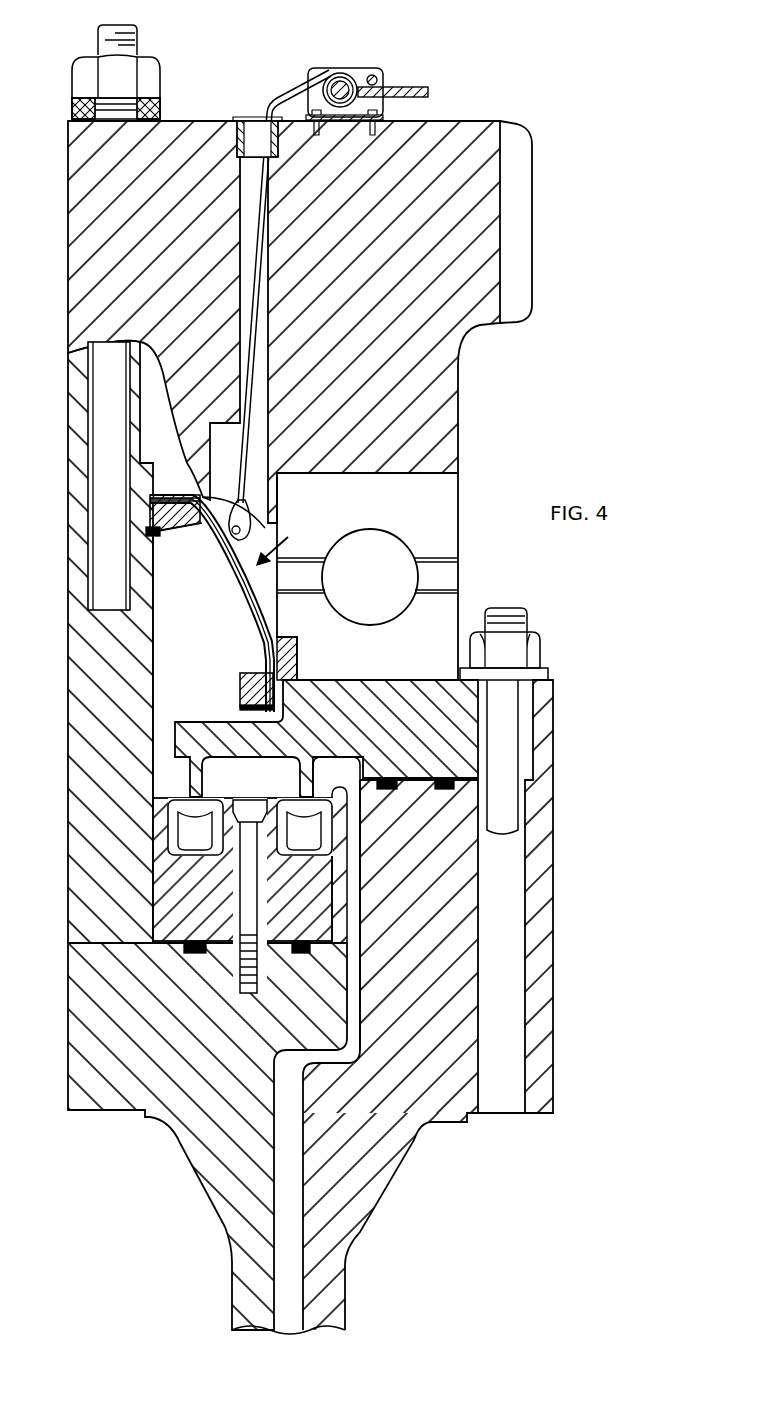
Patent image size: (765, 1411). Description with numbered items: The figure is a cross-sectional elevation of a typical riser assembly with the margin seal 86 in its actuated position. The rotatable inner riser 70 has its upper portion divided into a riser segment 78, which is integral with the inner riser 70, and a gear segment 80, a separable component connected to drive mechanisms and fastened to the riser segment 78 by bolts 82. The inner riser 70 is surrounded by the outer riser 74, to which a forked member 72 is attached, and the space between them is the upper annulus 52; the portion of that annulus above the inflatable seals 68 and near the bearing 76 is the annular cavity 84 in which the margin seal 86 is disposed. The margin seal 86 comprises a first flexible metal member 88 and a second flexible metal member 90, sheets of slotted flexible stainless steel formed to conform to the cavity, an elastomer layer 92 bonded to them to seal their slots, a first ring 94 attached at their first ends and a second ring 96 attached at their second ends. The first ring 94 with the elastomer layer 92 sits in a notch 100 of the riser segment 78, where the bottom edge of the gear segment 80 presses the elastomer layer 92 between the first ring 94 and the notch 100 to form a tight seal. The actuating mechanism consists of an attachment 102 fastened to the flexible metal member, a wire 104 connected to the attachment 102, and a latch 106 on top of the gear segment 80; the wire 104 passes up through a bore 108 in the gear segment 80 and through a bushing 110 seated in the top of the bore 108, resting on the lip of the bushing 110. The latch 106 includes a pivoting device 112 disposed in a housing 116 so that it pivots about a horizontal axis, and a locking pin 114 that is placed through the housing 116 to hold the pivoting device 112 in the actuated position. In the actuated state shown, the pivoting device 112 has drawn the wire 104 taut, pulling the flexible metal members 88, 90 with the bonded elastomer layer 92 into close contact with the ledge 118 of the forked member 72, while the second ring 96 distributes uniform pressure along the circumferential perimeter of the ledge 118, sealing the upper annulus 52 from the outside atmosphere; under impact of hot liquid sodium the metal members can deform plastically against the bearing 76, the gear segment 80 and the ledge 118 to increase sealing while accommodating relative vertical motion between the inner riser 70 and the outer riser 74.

The upper annulus 52 is at (355, 879).
The inflatable seals 68 is at (300, 857).
The inner riser 70 is at (137, 1045).
The forked member 72 is at (379, 740).
The outer riser 74 is at (387, 1030).
The bearing 76 is at (410, 515).
The riser segment 78 is at (87, 745).
The gear segment 80 is at (125, 224).
The bolts 82 is at (150, 72).
The annular cavity 84 is at (174, 596).
The margin seal 86 is at (286, 541).
The first flexible metal member 88 is at (245, 599).
The second flexible metal member 90 is at (262, 627).
The elastomer layer 92 is at (272, 619).
The first ring 94 is at (150, 511).
The second ring 96 is at (242, 684).
The notch 100 is at (150, 530).
The attachment 102 is at (260, 521).
The wire 104 is at (266, 354).
The latch 106 is at (362, 64).
The bore 108 is at (270, 279).
The bushing 110 is at (237, 117).
The pivoting device 112 is at (430, 92).
The locking pin 114 is at (382, 72).
The housing 116 is at (385, 104).
The ledge 118 is at (292, 664).